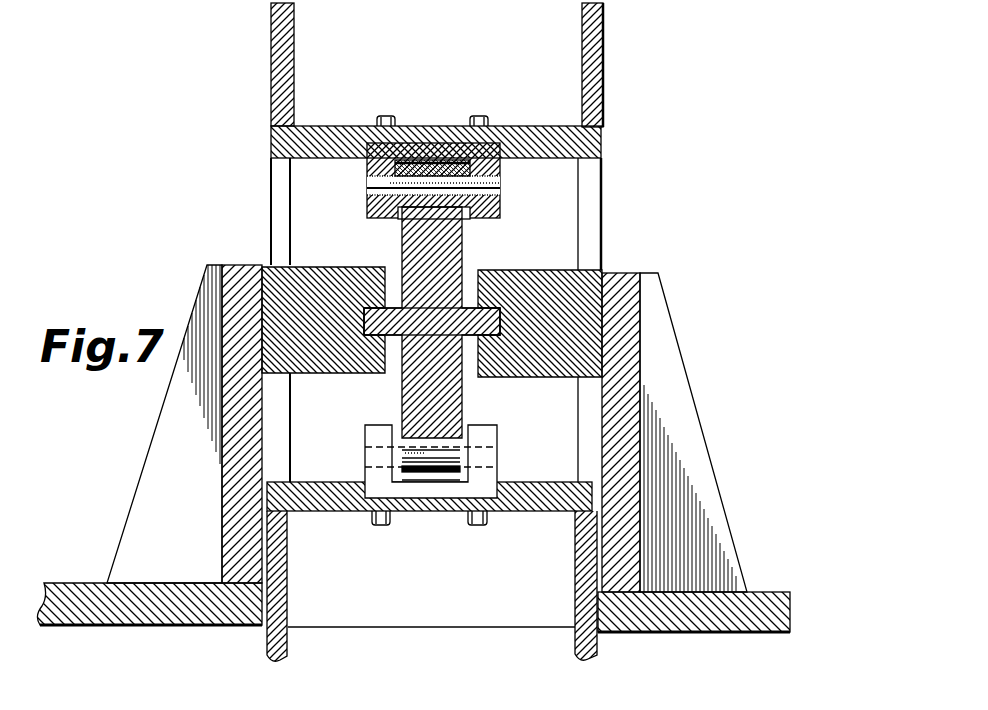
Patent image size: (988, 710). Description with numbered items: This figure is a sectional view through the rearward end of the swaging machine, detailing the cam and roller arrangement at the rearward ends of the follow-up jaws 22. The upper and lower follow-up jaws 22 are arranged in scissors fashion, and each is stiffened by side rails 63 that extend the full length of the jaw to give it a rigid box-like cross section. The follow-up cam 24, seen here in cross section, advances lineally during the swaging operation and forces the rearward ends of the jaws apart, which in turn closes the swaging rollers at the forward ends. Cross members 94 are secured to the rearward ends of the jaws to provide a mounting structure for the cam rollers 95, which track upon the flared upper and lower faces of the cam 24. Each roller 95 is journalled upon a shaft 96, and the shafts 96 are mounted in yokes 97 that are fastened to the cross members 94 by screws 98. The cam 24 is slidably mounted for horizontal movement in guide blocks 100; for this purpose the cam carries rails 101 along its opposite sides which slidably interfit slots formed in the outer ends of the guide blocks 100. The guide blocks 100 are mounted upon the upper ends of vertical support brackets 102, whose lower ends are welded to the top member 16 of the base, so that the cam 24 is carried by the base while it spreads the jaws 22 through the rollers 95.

The top 16 is at (74, 583).
The follow-up jaws 22 is at (605, 70).
The follow-up cam 24 is at (466, 240).
The side rails 63 is at (590, 182).
The cross members 94 is at (552, 138).
The cam rollers 95 is at (413, 220).
The shafts 96 is at (500, 182).
The yokes 97 is at (500, 212).
The screws 98 is at (485, 117).
The guide blocks 100 is at (330, 268).
The rails 101 is at (395, 303).
The support brackets 102 is at (623, 376).